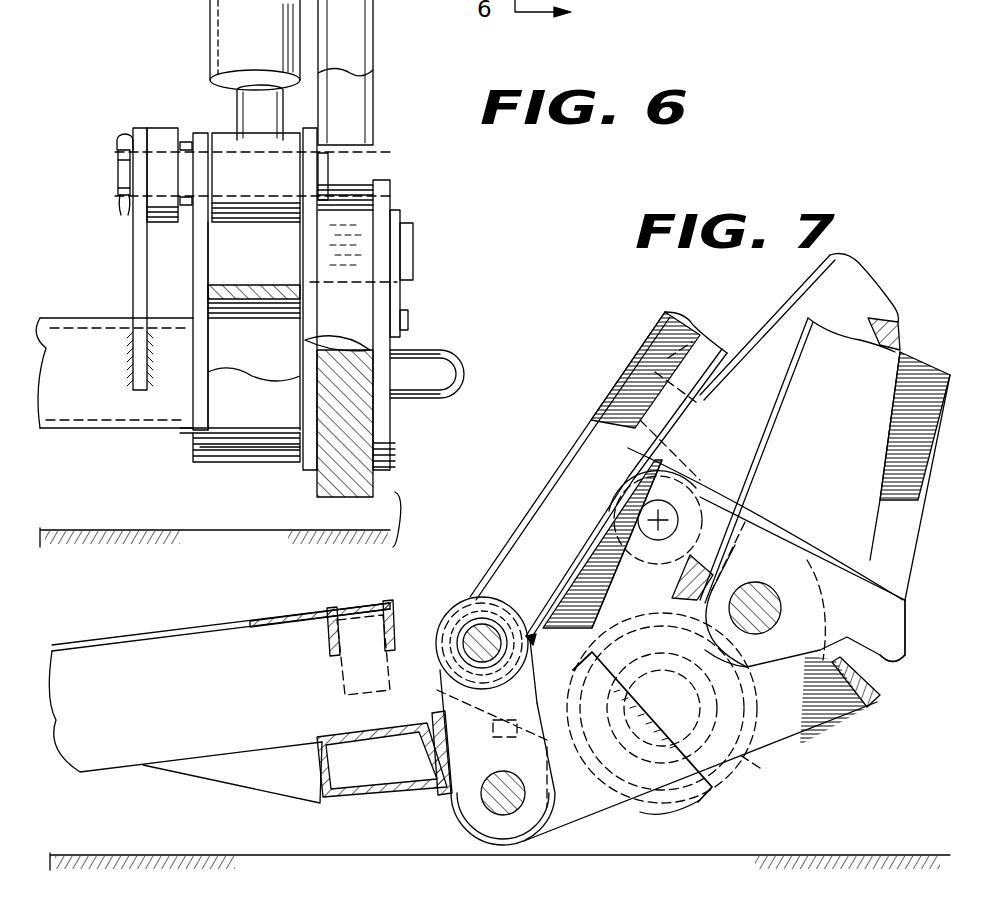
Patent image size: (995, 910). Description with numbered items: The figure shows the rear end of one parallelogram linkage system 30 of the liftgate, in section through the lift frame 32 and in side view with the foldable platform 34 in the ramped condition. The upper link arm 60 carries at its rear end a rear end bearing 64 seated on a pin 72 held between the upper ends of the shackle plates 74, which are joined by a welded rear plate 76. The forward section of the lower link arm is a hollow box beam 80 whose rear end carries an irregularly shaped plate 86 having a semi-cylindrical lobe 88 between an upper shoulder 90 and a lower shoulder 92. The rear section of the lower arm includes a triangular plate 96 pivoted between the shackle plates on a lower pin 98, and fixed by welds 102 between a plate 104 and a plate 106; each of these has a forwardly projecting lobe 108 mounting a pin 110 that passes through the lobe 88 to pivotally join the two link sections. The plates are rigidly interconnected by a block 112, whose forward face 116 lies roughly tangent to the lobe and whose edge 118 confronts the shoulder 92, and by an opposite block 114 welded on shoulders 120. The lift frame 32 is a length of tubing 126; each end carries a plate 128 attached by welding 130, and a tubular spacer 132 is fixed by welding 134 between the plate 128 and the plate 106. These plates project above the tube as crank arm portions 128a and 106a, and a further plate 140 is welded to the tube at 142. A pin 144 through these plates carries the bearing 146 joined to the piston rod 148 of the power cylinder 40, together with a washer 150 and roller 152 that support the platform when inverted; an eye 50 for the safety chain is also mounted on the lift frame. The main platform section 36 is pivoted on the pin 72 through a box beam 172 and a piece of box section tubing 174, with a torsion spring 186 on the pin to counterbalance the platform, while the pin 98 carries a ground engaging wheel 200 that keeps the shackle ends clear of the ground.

In FIG. 7, the parallelogram linkage system 30 is at (920, 348).
In FIG. 6, the lift frame 32 is at (71, 310).
In FIG. 7, the lift frame 32 is at (730, 747).
In FIG. 7, the foldable platform 34 is at (170, 621).
In FIG. 7, the main platform section 36 is at (133, 705).
In FIG. 6, the power cylinder 40 is at (218, 43).
In FIG. 7, the power cylinder 40 is at (806, 283).
In FIG. 6, the eye 50 is at (465, 360).
In FIG. 6, the upper link arm 60 is at (360, 47).
In FIG. 7, the upper link arm 60 is at (650, 345).
In FIG. 7, the rear end bearing 64 is at (458, 594).
In FIG. 7, the pin 72 is at (486, 632).
In FIG. 7, the shackle plates 74 is at (450, 745).
In FIG. 7, the rear plate 76 is at (445, 793).
In FIG. 6, the hollow box beam 80 is at (373, 133).
In FIG. 7, the hollow box beam 80 is at (875, 440).
In FIG. 7, the plate 86 is at (890, 627).
In FIG. 7, the semi-cylindrical lobe 88 is at (758, 662).
In FIG. 7, the upper shoulder 90 is at (882, 662).
In FIG. 7, the lower shoulder 92 is at (690, 563).
In FIG. 6, the plate 96 is at (392, 445).
In FIG. 7, the plate 96 is at (593, 813).
In FIG. 7, the pin 98 is at (508, 812).
In FIG. 6, the welds 102 is at (305, 340).
In FIG. 7, the welds 102 is at (531, 636).
In FIG. 6, the plate 104 is at (390, 415).
In FIG. 6, the plate 106 is at (310, 412).
In FIG. 7, the plate 106 is at (730, 773).
In FIG. 6, the crank arm portion 106a is at (312, 128).
In FIG. 7, the lobe 108 is at (810, 558).
In FIG. 6, the pin 110 is at (400, 250).
In FIG. 7, the pin 110 is at (780, 608).
In FIG. 6, the block 112 is at (370, 253).
In FIG. 7, the block 112 is at (672, 600).
In FIG. 7, the block 114 is at (878, 702).
In FIG. 7, the forward face 116 is at (717, 597).
In FIG. 6, the edge 118 is at (363, 210).
In FIG. 7, the edge 118 is at (690, 590).
In FIG. 7, the shoulders 120 is at (852, 710).
In FIG. 6, the tubing 126 is at (78, 402).
In FIG. 7, the tubing 126 is at (742, 706).
In FIG. 6, the plate 128 is at (193, 463).
In FIG. 6, the crank arm portion 128a is at (146, 142).
In FIG. 6, the welding 130 is at (188, 433).
In FIG. 6, the tubular spacer 132 is at (268, 447).
In FIG. 7, the tubular spacer 132 is at (762, 769).
In FIG. 6, the welding 134 is at (298, 284).
In FIG. 6, the plate 140 is at (133, 235).
In FIG. 6, the weld 142 is at (192, 320).
In FIG. 6, the pin 144 is at (118, 173).
In FIG. 7, the pin 144 is at (655, 521).
In FIG. 6, the bearing 146 is at (272, 185).
In FIG. 7, the bearing 146 is at (640, 492).
In FIG. 6, the piston rod 148 is at (247, 110).
In FIG. 7, the piston rod 148 is at (748, 471).
In FIG. 6, the washer 150 is at (189, 142).
In FIG. 6, the roller 152 is at (157, 127).
In FIG. 7, the box beam 172 is at (318, 671).
In FIG. 7, the box section tubing 174 is at (317, 783).
In FIG. 7, the torsion spring 186 is at (336, 697).
In FIG. 7, the ground engaging wheel 200 is at (460, 827).